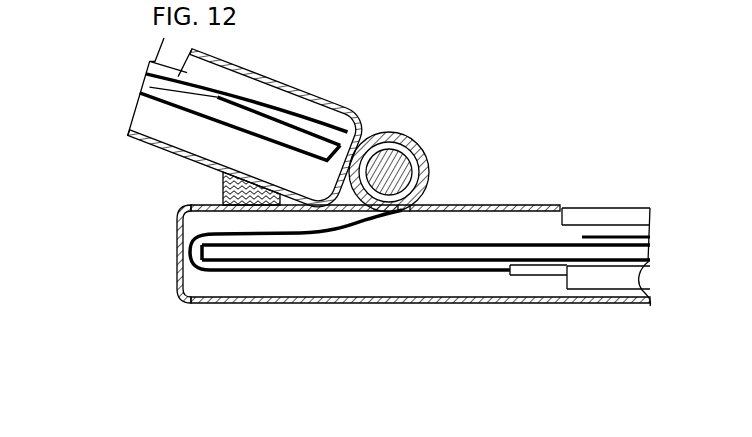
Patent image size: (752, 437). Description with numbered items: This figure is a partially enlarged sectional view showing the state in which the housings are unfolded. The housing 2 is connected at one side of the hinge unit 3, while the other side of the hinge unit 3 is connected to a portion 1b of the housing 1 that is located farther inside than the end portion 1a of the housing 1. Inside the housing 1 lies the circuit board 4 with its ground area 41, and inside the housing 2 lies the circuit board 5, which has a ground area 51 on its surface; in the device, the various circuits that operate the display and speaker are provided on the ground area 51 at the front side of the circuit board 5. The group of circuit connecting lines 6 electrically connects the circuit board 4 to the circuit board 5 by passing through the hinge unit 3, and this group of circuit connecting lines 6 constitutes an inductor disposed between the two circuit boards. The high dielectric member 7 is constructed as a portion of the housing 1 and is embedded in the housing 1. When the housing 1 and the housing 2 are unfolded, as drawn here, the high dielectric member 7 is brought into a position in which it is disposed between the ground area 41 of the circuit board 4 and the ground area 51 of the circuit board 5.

The housing 1 is at (637, 308).
The end portion 1a is at (177, 288).
The portion 1b is at (400, 222).
The housing 2 is at (130, 133).
The hinge unit 3 is at (422, 148).
The circuit board 4 is at (638, 258).
The ground area 41 is at (235, 307).
The circuit board 5 is at (152, 82).
The ground area 51 is at (163, 103).
The group of circuit connecting lines 6 is at (463, 272).
The high dielectric member 7 is at (223, 179).